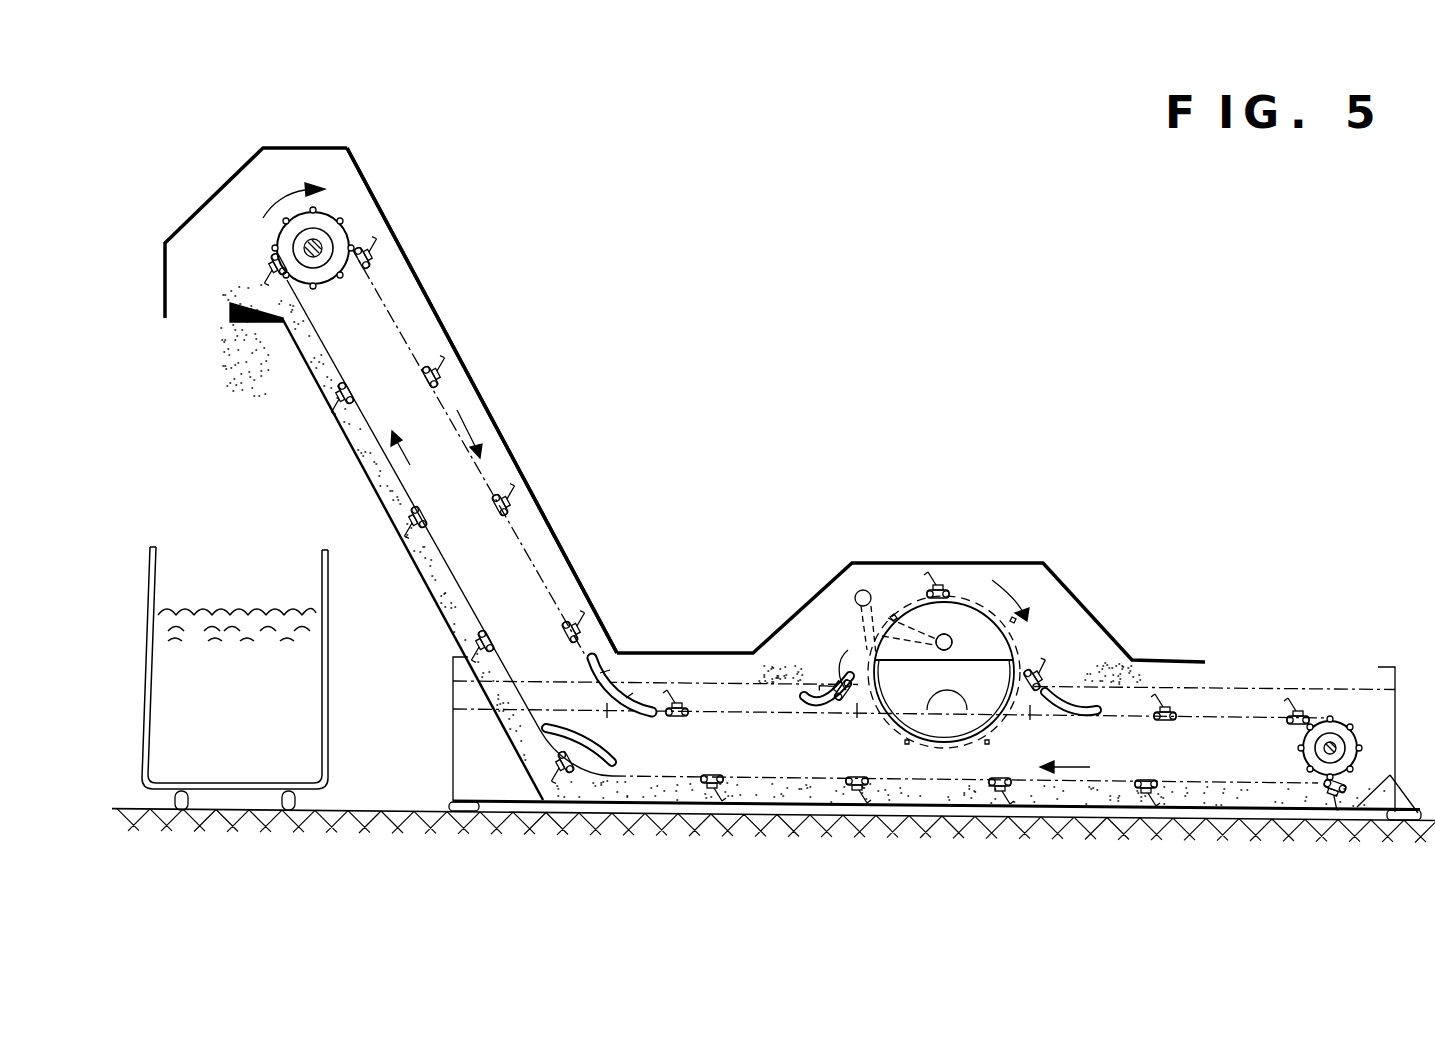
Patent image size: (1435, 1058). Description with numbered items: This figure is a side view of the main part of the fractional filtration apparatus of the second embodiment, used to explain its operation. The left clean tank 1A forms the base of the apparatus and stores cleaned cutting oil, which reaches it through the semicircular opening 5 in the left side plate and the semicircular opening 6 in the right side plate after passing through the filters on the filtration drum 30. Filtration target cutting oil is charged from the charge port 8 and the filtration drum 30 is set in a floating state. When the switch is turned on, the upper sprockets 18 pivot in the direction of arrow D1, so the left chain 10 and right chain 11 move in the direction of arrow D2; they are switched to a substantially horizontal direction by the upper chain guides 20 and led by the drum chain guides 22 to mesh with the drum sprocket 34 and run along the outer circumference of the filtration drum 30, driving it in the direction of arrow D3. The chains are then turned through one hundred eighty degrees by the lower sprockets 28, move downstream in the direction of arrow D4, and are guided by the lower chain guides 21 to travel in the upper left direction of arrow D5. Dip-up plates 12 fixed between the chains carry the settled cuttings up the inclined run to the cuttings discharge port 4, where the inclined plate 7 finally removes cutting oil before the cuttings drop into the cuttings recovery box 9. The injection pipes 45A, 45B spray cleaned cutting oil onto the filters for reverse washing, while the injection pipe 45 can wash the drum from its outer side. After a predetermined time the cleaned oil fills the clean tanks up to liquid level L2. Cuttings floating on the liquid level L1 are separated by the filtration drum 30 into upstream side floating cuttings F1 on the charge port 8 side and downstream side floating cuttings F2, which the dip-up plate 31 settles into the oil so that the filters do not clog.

The left clean tank 1A is at (472, 753).
The cuttings discharge port 4 is at (192, 307).
The semicircular opening 5 is at (998, 564).
The semicircular opening 6 is at (993, 677).
The plate 7 is at (257, 312).
The charge port 8 is at (1302, 680).
The cuttings recovery box 9 is at (290, 693).
The left chain 10 is at (400, 312).
The right chain 11 is at (482, 400).
The dip-up plates 12 is at (374, 247).
The upper sprockets 18 is at (328, 227).
The upper chain guides 20 is at (598, 652).
The lower chain guides 21 is at (532, 772).
The drum chain guides 22 is at (836, 672).
The lower sprockets 28 is at (1333, 745).
The filtration drum 30 is at (887, 610).
The dip-up plate 31 is at (895, 612).
The drum sprocket 34 is at (846, 662).
The injection pipe 45 is at (863, 589).
The injection pipe 45A is at (946, 634).
The injection pipe 45B is at (944, 642).
The arrow D1 is at (293, 192).
The arrow D2 is at (467, 423).
The arrow D3 is at (1030, 595).
The arrow D4 is at (1073, 772).
The arrow D5 is at (365, 466).
The liquid level L1 is at (683, 680).
The liquid level L2 is at (927, 708).
The upstream side floating cuttings F1 is at (1128, 665).
The downstream side floating cuttings F2 is at (788, 666).